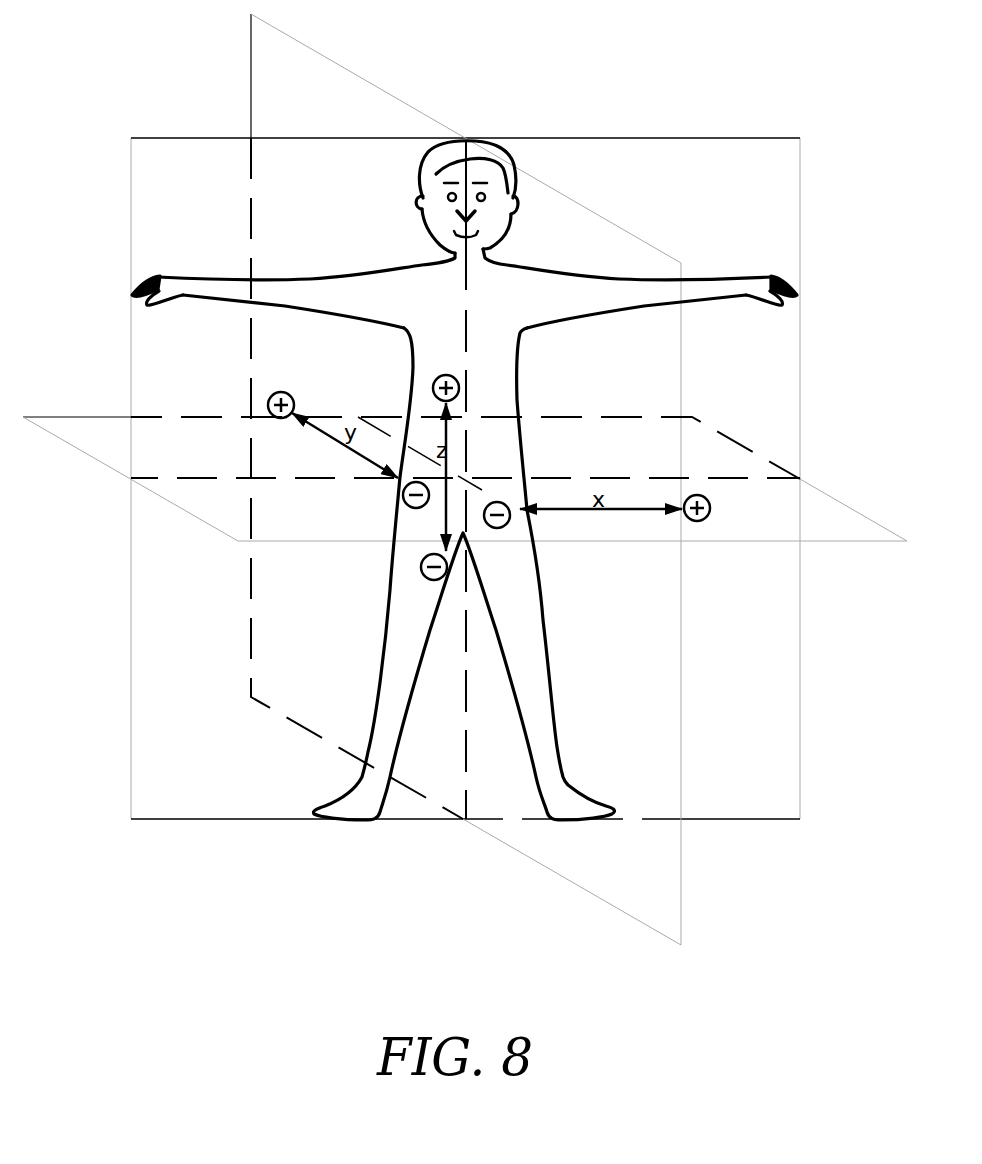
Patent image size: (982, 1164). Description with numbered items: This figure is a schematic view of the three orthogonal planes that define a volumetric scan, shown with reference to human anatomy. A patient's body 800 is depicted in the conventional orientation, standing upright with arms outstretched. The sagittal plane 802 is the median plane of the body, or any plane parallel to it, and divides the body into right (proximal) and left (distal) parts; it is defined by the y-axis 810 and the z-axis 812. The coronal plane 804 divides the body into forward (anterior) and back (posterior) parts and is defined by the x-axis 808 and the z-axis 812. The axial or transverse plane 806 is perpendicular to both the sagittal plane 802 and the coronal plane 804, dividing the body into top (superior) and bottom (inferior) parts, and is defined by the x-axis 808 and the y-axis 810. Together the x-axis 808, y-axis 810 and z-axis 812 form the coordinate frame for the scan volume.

The patient's body 800 is at (476, 137).
The sagittal plane 802 is at (670, 885).
The coronal plane 804 is at (743, 150).
The axial or transverse plane 806 is at (86, 427).
The x-axis 808 is at (650, 477).
The y-axis 810 is at (572, 542).
The z-axis 812 is at (465, 777).